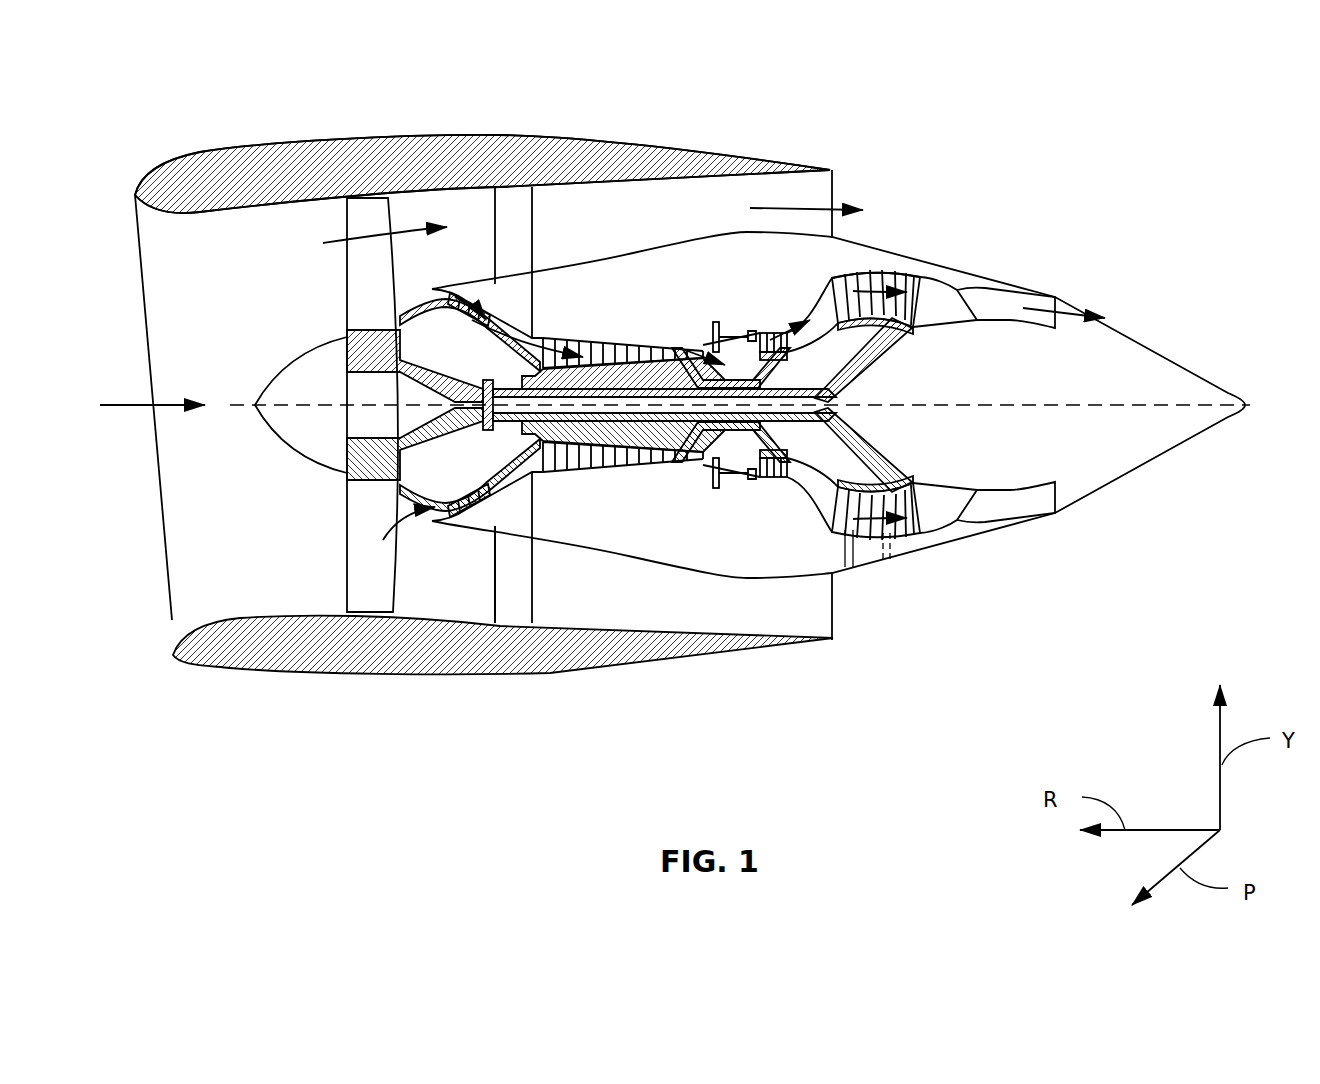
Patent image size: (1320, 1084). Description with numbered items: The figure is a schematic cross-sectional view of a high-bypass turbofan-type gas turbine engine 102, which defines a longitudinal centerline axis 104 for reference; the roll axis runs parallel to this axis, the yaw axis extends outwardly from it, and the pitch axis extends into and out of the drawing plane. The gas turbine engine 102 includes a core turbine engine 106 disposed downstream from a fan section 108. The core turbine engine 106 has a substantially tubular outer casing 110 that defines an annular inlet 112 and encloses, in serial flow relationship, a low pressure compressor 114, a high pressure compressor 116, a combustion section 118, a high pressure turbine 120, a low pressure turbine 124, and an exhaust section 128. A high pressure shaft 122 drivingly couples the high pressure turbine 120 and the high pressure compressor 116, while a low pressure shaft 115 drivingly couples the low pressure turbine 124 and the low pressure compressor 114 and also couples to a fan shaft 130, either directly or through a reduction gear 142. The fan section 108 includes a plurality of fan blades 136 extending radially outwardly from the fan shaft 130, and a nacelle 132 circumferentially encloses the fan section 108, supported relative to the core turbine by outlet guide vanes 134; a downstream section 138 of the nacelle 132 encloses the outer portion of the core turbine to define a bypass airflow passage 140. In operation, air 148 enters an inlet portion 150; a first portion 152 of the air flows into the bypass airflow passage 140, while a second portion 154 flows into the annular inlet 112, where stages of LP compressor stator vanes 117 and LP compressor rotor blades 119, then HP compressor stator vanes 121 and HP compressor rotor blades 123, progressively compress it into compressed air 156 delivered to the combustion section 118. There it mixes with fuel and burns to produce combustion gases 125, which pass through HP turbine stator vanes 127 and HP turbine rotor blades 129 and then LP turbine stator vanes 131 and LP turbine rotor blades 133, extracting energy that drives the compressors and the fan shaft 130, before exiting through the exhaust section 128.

The gas turbine engine 102 is at (970, 140).
The longitudinal centerline axis 104 is at (1006, 405).
The core turbine engine 106 is at (703, 275).
The fan section 108 is at (382, 122).
The outer casing 110 is at (680, 568).
The annular inlet 112 is at (394, 539).
The low pressure compressor 114 is at (498, 482).
The low pressure shaft 115 is at (853, 380).
The high pressure compressor 116 is at (558, 460).
The LP compressor stator vanes 117 is at (462, 518).
The combustion section 118 is at (726, 480).
The LP compressor rotor blades 119 is at (478, 522).
The high pressure turbine 120 is at (802, 468).
The HP compressor stator vanes 121 is at (650, 465).
The high pressure shaft 122 is at (765, 378).
The HP compressor rotor blades 123 is at (660, 468).
The low pressure turbine 124 is at (915, 530).
The combustion gases 125 is at (777, 336).
The HP turbine stator vanes 127 is at (762, 495).
The exhaust section 128 is at (1056, 303).
The HP turbine rotor blades 129 is at (772, 460).
The fan shaft 130 is at (398, 370).
The LP turbine stator vanes 131 is at (840, 300).
The nacelle 132 is at (388, 676).
The LP turbine rotor blades 133 is at (833, 292).
The outlet guide vanes 134 is at (536, 212).
The fan blades 136 is at (347, 528).
The downstream section of the nacelle 138 is at (740, 157).
The bypass airflow passage 140 is at (682, 212).
The reduction gear 142 is at (487, 380).
The air 148 is at (160, 405).
The inlet portion 150 is at (168, 612).
The first portion of the air 152 is at (360, 243).
The second portion of the air 154 is at (420, 300).
The compressed air 156 is at (700, 357).